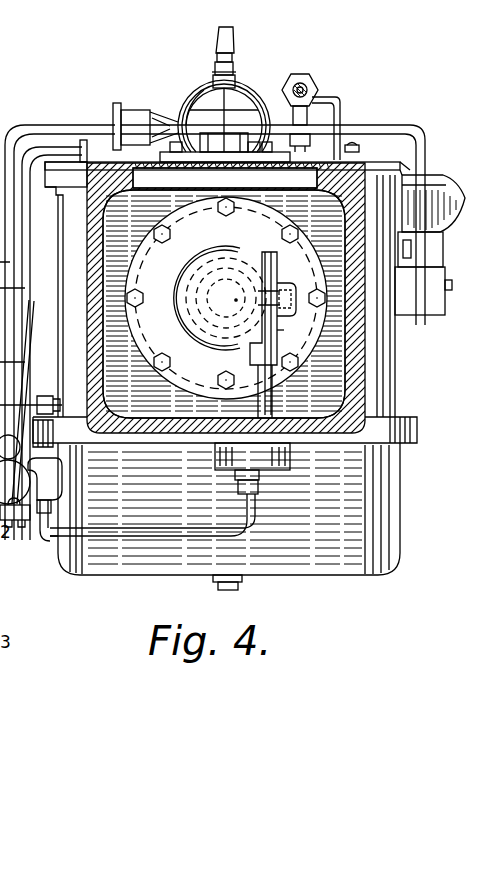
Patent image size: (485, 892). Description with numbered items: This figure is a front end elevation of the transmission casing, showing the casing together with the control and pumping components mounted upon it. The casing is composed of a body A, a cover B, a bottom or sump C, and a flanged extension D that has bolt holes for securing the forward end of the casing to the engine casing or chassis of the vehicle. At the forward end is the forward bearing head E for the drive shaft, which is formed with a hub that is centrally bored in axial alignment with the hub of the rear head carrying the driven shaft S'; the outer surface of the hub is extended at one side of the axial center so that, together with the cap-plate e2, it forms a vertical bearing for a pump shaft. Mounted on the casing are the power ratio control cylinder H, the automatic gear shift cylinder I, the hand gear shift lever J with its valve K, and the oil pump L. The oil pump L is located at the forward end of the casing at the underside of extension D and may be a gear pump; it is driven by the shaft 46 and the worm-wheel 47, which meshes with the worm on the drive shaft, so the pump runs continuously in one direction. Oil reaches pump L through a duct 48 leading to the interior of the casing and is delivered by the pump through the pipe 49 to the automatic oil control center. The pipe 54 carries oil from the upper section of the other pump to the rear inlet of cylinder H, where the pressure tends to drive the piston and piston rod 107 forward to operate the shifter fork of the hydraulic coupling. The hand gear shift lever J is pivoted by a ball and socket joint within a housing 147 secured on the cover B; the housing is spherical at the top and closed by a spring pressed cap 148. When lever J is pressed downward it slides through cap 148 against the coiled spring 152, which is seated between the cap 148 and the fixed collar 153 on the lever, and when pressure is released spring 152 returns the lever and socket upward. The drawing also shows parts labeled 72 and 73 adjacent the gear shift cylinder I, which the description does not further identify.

The body A is at (396, 367).
The cover B is at (85, 165).
The bottom or sump C is at (320, 556).
The flanged extension D is at (367, 398).
The forward bearing head E is at (266, 230).
The power ratio control cylinder H is at (303, 85).
The automatic gear shift cylinder I is at (452, 180).
The hand gear shift lever J is at (216, 42).
The valve K is at (130, 105).
The oil pump L is at (265, 466).
The shaft 46 is at (266, 408).
The worm-wheel 47 is at (280, 290).
The duct 48 is at (250, 417).
The pipe 49 is at (45, 545).
The pipe 54 is at (310, 146).
The conduit 72 is at (380, 136).
The bracket 73 is at (435, 283).
The piston rod 107 is at (306, 90).
The housing 147 is at (236, 110).
The spring pressed cap 148 is at (240, 100).
The coiled spring 152 is at (212, 70).
The fixed collar 153 is at (214, 58).
The cap-plate e2 is at (284, 330).
The driven shaft S' is at (222, 294).